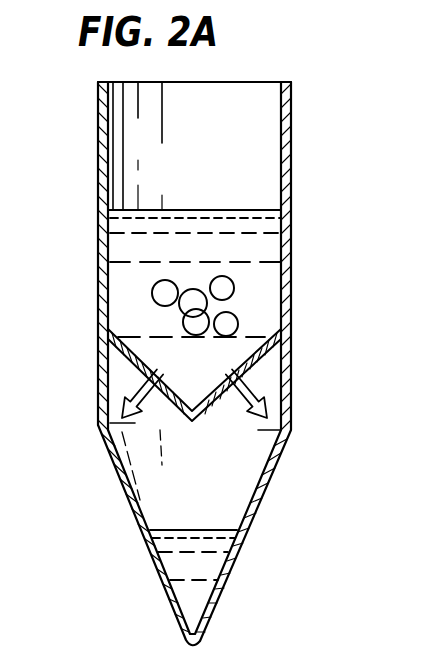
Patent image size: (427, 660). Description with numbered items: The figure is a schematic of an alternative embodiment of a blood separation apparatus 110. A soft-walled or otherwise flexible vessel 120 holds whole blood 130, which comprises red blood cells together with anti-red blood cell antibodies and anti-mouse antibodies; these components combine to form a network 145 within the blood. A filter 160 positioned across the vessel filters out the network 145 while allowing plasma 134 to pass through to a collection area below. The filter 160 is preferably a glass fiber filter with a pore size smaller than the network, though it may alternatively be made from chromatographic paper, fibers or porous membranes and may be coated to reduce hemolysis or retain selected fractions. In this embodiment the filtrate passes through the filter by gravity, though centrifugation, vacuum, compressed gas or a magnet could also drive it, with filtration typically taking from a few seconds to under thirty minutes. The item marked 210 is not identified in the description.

The blood separation apparatus 110 is at (306, 122).
The flexible vessel 120 is at (255, 505).
The whole blood 130 is at (152, 246).
The plasma 134 is at (180, 565).
The network 145 is at (236, 290).
The filter 160 is at (257, 357).
The centrifugal force direction 210 is at (426, 659).